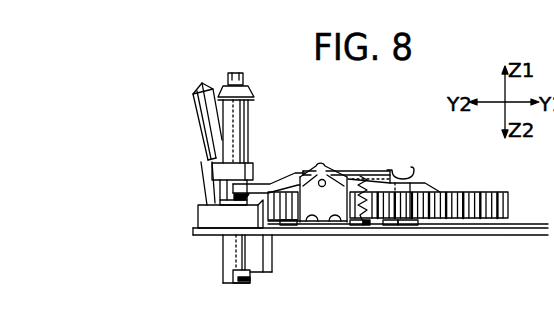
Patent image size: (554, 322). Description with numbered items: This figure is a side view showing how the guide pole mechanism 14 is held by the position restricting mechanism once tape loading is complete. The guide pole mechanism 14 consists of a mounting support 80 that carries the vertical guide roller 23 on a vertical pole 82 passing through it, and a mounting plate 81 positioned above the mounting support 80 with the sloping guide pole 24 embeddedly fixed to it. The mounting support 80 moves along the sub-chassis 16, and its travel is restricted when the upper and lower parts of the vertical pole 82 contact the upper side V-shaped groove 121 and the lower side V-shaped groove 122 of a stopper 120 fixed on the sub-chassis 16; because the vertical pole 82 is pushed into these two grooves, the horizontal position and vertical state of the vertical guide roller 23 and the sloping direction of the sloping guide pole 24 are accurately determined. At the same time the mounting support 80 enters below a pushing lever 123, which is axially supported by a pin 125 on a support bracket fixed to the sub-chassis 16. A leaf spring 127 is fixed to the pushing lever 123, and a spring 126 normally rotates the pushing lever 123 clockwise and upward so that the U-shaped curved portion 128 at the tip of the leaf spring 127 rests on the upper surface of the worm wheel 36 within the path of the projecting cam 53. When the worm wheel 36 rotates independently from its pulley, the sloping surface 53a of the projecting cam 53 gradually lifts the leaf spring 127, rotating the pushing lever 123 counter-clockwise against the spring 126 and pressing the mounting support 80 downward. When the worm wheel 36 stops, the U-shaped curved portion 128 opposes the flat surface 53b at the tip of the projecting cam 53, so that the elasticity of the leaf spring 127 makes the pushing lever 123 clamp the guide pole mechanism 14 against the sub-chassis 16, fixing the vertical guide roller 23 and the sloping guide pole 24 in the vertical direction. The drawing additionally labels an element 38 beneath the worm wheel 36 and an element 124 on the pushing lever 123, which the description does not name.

The guide pole mechanism 14 is at (193, 207).
The sub-chassis 16 is at (508, 236).
The vertical guide roller 23 is at (250, 109).
The sloping guide pole 24 is at (198, 118).
The worm wheel 36 is at (494, 192).
The slide plate 38 is at (387, 225).
The projecting cam 53 is at (415, 222).
The sloping surface 53a is at (427, 183).
The flat surface 53b is at (388, 170).
The mounting support 80 is at (217, 220).
The mounting plate 81 is at (203, 195).
The vertical pole 82 is at (226, 263).
The stopper 120 is at (285, 223).
The upper side V-shaped groove 121 is at (262, 182).
The lower side V-shaped groove 122 is at (231, 283).
The pushing lever 123 is at (283, 185).
The pin 124 is at (324, 180).
The pin 125 is at (322, 187).
The spring 126 is at (362, 222).
The leaf spring 127 is at (372, 170).
The U-shaped curved portion 128 is at (407, 184).